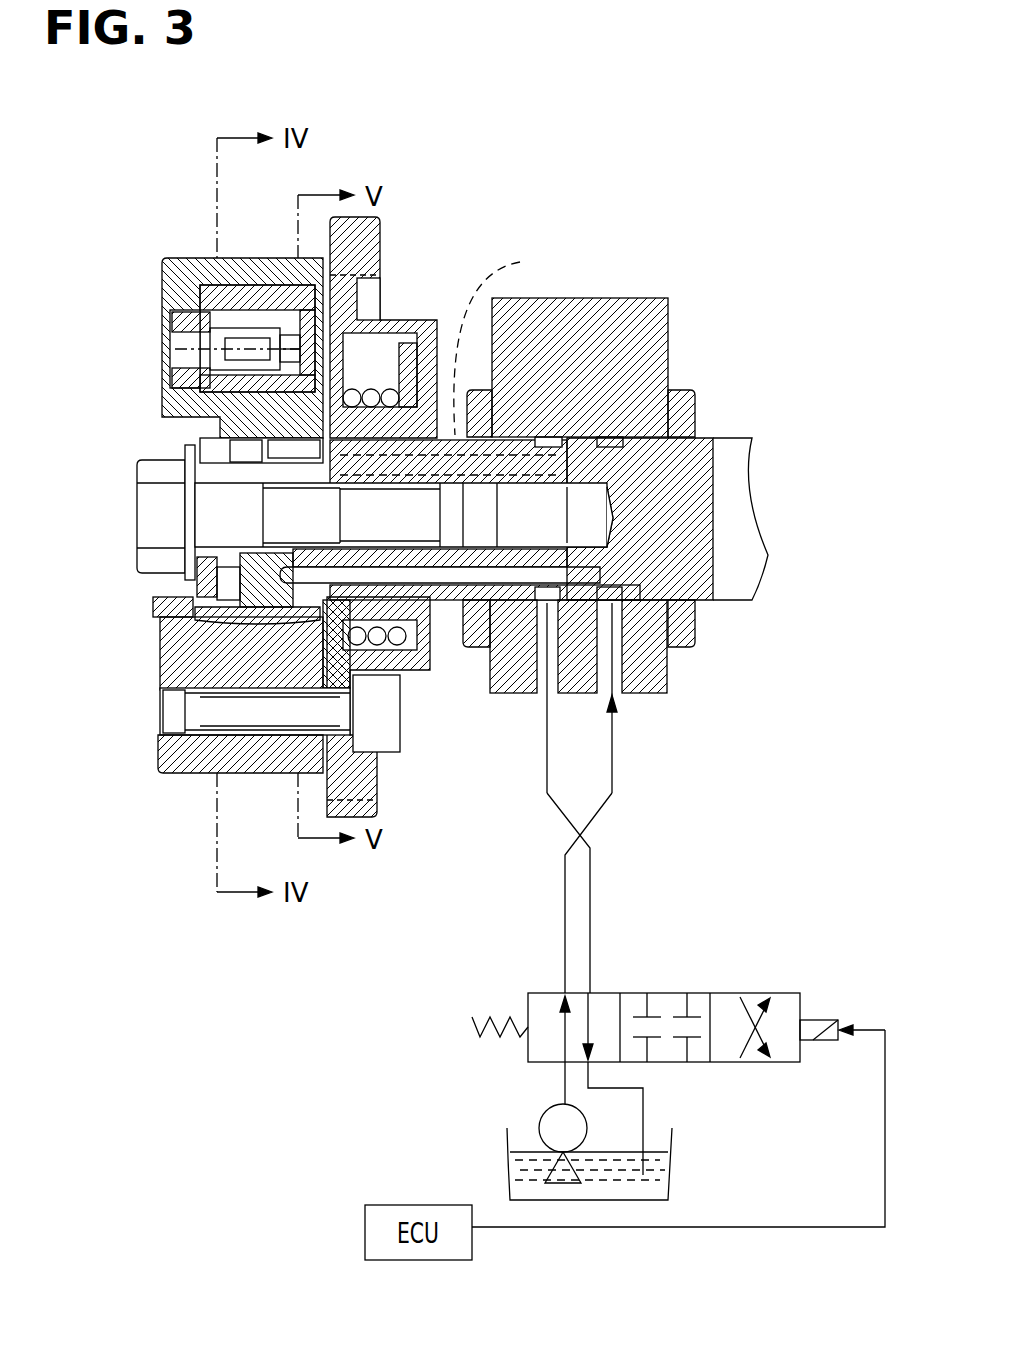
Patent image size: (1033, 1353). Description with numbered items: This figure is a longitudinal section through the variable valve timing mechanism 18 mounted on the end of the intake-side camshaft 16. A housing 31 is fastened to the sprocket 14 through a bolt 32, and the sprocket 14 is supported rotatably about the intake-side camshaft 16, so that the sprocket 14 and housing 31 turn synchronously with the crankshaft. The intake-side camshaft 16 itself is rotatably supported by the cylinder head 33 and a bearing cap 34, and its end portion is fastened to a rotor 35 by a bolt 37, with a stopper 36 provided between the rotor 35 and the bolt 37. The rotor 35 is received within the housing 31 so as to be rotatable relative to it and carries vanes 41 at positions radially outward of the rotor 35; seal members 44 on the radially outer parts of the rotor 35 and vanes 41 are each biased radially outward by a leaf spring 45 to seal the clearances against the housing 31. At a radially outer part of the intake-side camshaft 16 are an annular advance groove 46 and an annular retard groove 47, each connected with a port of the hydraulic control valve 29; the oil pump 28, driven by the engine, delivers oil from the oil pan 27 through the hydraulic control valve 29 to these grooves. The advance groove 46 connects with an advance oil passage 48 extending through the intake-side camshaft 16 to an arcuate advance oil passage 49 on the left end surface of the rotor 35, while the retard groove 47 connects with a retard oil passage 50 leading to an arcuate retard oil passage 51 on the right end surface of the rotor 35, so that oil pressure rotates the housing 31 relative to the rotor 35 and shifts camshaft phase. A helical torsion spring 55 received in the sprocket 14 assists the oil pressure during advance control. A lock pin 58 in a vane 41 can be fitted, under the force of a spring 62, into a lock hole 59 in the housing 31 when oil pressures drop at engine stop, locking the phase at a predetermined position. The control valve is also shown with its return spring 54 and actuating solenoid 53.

The sprocket 14 is at (382, 258).
The intake-side camshaft 16 is at (683, 490).
The variable valve timing mechanism 18 is at (650, 226).
The oil pan 27 is at (672, 1165).
The oil pump 28 is at (540, 1120).
The hydraulic control valve 29 is at (645, 993).
The housing 31 is at (160, 288).
The bolt 32 is at (402, 714).
The cylinder head 33 is at (667, 683).
The bearing cap 34 is at (670, 352).
The rotor 35 is at (262, 625).
The stopper 36 is at (190, 590).
The bolt 37 is at (137, 517).
The vane 41 is at (212, 292).
The seal member 44 is at (210, 620).
The leaf spring 45 is at (250, 622).
The advance groove 46 is at (668, 658).
The retard groove 47 is at (550, 603).
The advance oil passage 48 is at (443, 580).
The arcuate advance oil passage 49 is at (160, 612).
The retard oil passage 50 is at (502, 335).
The arcuate retard oil passage 51 is at (357, 675).
The solenoid 53 is at (830, 1045).
The return spring 54 is at (482, 1015).
The helical torsion spring 55 is at (368, 383).
The lock pin 58 is at (200, 350).
The lock hole 59 is at (176, 372).
The spring 62 is at (165, 316).